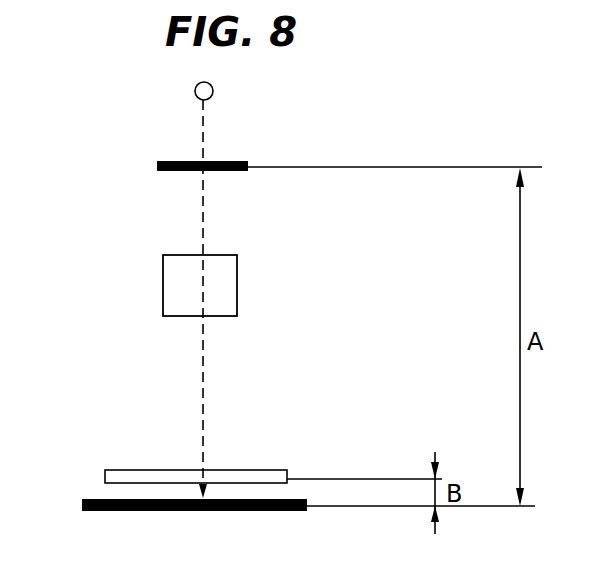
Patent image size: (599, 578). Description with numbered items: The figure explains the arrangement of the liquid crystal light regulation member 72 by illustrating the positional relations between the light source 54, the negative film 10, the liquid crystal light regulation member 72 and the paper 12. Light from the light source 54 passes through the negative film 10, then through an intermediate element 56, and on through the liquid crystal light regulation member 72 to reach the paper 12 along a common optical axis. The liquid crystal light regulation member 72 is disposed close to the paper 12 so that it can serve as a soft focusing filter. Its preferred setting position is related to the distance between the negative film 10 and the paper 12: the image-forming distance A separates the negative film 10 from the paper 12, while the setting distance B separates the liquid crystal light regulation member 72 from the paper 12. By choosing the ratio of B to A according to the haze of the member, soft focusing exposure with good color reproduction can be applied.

The light source 54 is at (195, 97).
The negative film 10 is at (158, 166).
The optical element 56 is at (237, 292).
The liquid crystal light regulation member 72 is at (120, 470).
The paper 12 is at (82, 500).